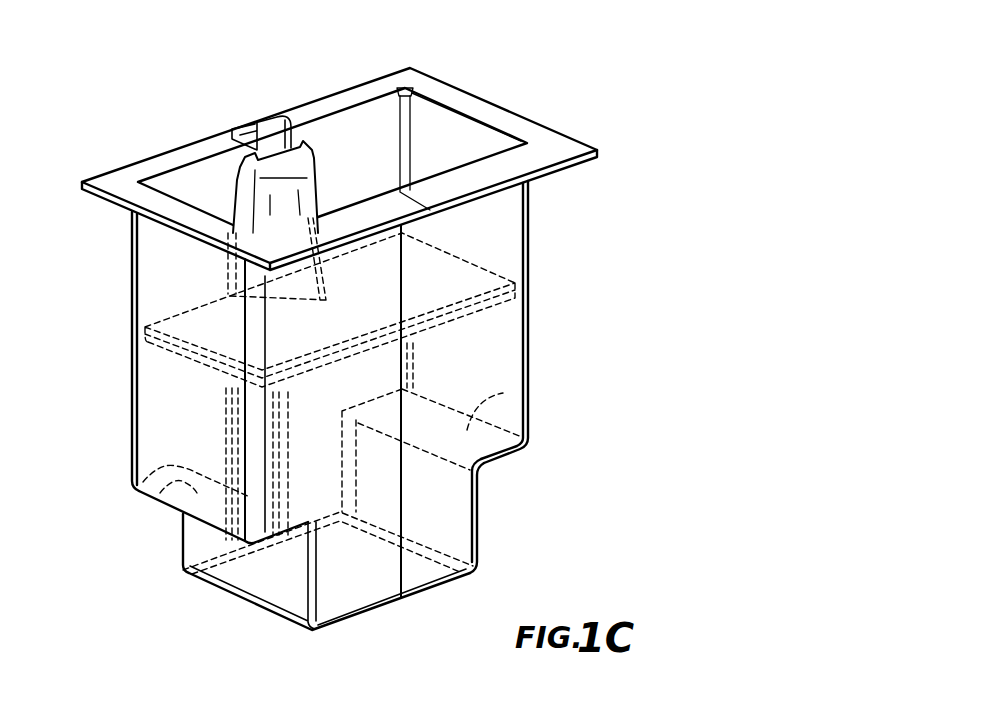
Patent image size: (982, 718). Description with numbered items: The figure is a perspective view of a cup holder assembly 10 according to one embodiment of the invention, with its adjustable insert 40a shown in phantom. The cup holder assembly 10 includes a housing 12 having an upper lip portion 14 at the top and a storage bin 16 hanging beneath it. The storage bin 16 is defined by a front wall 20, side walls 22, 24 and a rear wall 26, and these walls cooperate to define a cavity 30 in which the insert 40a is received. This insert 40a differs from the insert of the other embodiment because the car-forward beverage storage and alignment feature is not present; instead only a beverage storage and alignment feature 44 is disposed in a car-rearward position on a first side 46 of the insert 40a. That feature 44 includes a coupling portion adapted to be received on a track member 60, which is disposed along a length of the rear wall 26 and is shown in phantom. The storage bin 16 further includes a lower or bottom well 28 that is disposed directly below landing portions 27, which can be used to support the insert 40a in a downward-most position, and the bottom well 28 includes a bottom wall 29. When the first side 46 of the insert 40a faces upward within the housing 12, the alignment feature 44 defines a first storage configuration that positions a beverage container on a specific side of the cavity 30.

The cup holder assembly 10 is at (563, 76).
The housing 12 is at (480, 91).
The upper lip portion 14 is at (555, 148).
The storage bin 16 is at (533, 355).
The front wall 20 is at (490, 232).
The side wall 22 is at (525, 295).
The side wall 24 is at (167, 412).
The rear wall 26 is at (132, 252).
The landing portions 27 is at (503, 393).
The lower well 28 is at (477, 535).
The bottom wall 29 is at (348, 621).
The cavity 30 is at (375, 132).
The insert 40a is at (190, 330).
The beverage storage and alignment feature 44 is at (268, 163).
The first side 46 is at (380, 307).
The track member 60 is at (248, 133).